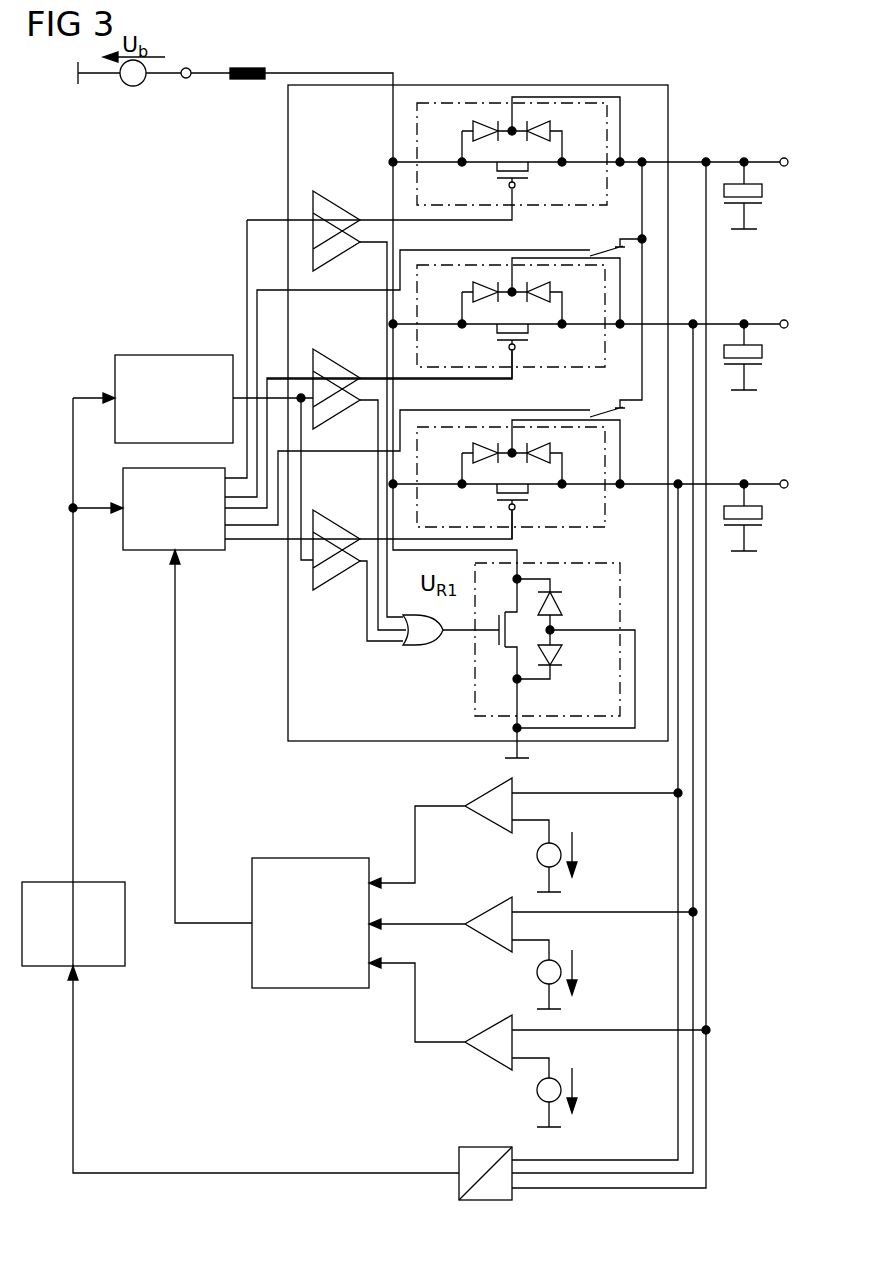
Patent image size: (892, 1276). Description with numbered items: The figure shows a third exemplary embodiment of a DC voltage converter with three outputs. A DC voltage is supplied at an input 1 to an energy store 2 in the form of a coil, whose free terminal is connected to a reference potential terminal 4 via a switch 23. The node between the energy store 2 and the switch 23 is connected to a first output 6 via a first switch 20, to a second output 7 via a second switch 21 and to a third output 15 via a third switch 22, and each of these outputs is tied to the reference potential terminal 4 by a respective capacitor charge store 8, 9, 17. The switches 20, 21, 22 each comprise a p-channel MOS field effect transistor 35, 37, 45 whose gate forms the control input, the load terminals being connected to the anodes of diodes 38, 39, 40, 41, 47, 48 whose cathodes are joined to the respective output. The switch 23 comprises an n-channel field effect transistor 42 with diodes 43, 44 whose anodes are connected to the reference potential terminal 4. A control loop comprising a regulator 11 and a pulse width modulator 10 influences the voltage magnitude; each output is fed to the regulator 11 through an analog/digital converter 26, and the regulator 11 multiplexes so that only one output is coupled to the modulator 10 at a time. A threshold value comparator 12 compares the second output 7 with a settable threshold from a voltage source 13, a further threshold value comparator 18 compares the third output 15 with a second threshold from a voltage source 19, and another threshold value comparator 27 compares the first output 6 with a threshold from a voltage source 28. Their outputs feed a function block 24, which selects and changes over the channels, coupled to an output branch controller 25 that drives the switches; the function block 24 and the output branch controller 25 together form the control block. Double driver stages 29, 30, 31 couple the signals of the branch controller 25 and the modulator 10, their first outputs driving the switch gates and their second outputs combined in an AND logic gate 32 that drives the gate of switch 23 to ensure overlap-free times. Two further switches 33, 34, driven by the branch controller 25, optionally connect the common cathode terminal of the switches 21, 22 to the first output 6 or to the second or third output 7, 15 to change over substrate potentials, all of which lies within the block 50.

The input 1 is at (185, 80).
The energy store 2 is at (247, 80).
The reference potential terminal 4 is at (520, 761).
The first output 6 is at (784, 167).
The second output 7 is at (784, 329).
The charge store 8 is at (756, 206).
The charge store 9 is at (756, 367).
The modulator 10 is at (175, 355).
The regulator 11 is at (45, 882).
The threshold value comparator 12 is at (479, 911).
The voltage source 13 is at (537, 973).
The third output 15 is at (784, 489).
The charge store 17 is at (756, 527).
The further threshold value comparator 18 is at (479, 793).
The voltage source 19 is at (537, 856).
The first switch 20 is at (483, 103).
The second switch 21 is at (533, 265).
The third switch 22 is at (606, 508).
The switch 23 is at (475, 690).
The function block 24 is at (311, 858).
The output branch controller 25 is at (150, 552).
The analog/digital converter 26 is at (490, 1147).
The threshold value comparator 27 is at (476, 1029).
The voltage source 28 is at (537, 1091).
The driver stage 29 is at (331, 206).
The driver stage 30 is at (331, 364).
The driver stage 31 is at (331, 525).
The logic gate 32 is at (412, 647).
The further switch 33 is at (616, 240).
The further switch 34 is at (616, 404).
The transistor 35 is at (497, 178).
The p-channel field effect transistor 37 is at (497, 340).
The diode 38 is at (462, 131).
The diode 39 is at (562, 131).
The diode 40 is at (462, 292).
The diode 41 is at (562, 292).
The n-channel field effect transistor 42 is at (500, 650).
The diode 43 is at (562, 604).
The diode 44 is at (562, 652).
The p-channel field effect transistor 45 is at (497, 500).
The diode 47 is at (462, 453).
The diode 48 is at (562, 453).
The block 50 is at (288, 648).